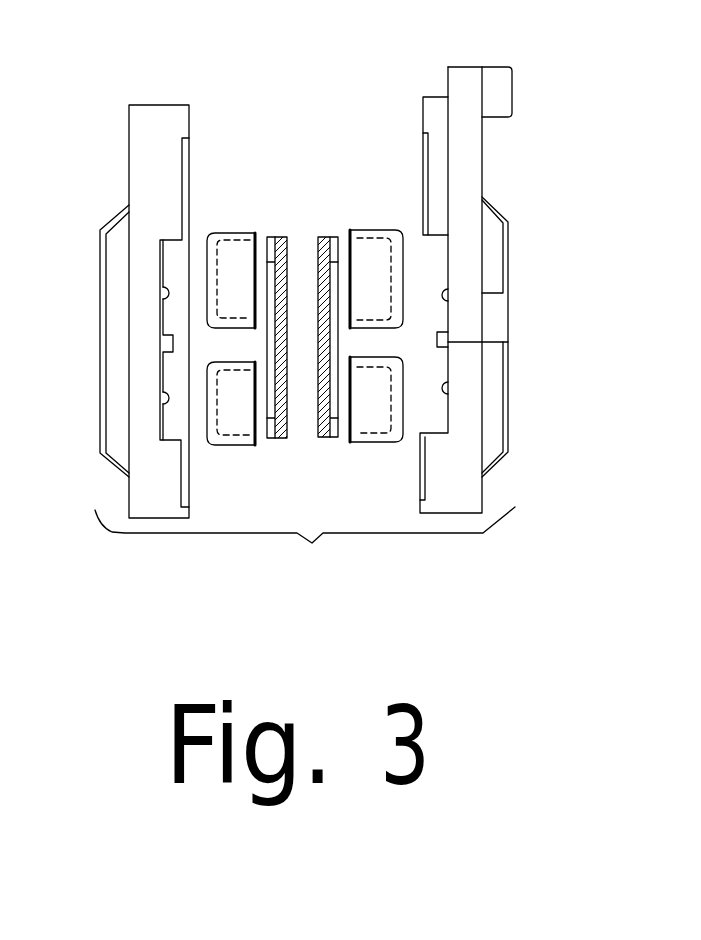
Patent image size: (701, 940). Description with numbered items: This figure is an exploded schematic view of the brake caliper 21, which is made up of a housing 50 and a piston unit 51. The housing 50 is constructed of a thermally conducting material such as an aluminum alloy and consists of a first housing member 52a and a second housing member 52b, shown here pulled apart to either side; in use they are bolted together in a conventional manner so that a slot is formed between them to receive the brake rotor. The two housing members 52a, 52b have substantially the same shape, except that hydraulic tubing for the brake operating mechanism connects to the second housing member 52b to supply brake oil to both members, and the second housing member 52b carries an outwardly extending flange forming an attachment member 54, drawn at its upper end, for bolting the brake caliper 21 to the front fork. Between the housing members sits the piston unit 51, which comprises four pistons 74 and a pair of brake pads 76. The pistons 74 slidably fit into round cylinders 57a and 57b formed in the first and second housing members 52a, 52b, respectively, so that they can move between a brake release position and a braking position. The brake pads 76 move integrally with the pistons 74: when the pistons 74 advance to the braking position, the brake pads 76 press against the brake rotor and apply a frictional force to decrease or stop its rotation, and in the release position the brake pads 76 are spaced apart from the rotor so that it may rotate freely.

The brake caliper 21 is at (547, 117).
The housing 50 is at (153, 100).
The piston unit 51 is at (305, 314).
The first housing member 52a is at (100, 263).
The second housing member 52b is at (508, 260).
The attachment member 54 is at (480, 67).
The round cylinders 57a is at (165, 295).
The round cylinders 57b is at (448, 395).
The pistons 74 is at (227, 231).
The brake pads 76 is at (323, 438).